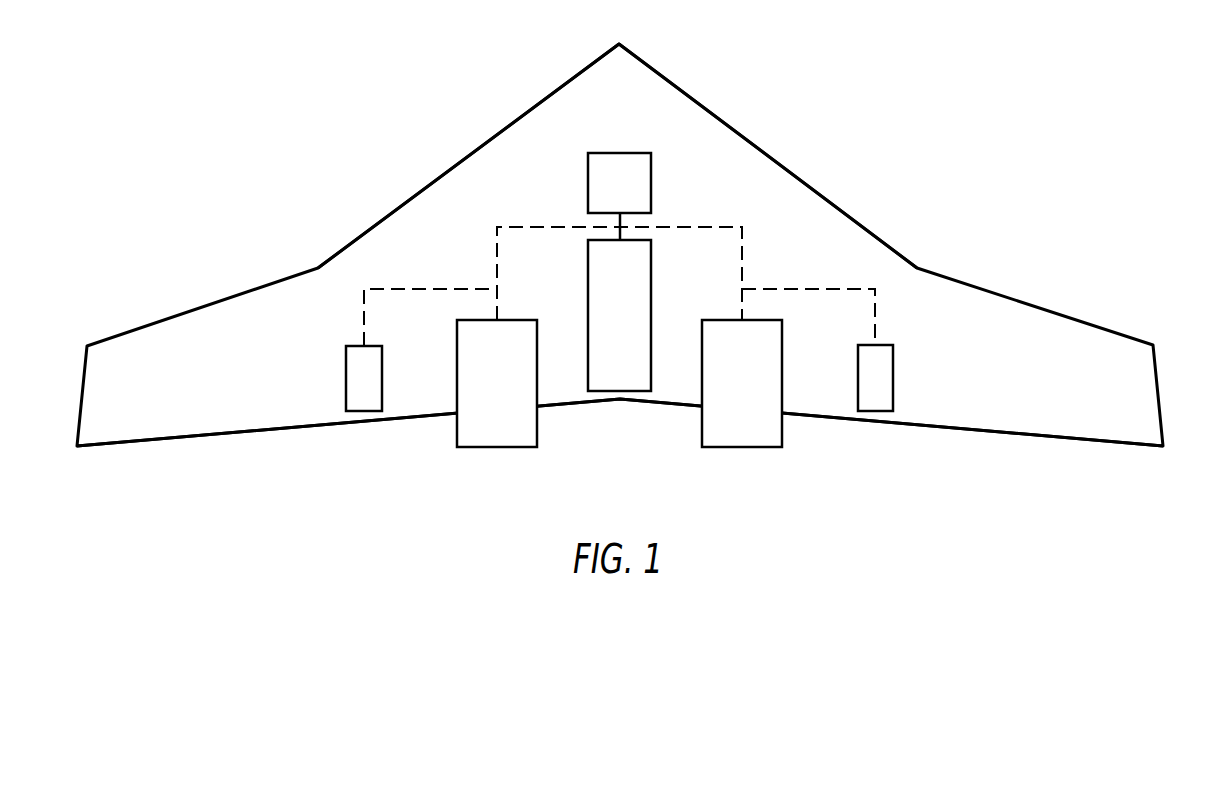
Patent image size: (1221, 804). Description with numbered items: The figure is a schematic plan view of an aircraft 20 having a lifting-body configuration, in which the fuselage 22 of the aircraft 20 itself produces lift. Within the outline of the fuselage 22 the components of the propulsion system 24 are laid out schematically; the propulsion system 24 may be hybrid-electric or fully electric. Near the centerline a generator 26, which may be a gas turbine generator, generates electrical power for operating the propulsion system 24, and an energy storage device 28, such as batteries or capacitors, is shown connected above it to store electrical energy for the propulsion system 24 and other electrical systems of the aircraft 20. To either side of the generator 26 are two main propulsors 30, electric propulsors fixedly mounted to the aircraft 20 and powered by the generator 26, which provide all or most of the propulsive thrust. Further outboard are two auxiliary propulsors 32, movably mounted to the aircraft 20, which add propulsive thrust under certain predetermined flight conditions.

The aircraft 20 is at (904, 129).
The fuselage 22 is at (807, 183).
The propulsion system 24 is at (805, 452).
The generator 26 is at (651, 291).
The energy storage device 28 is at (651, 172).
The main propulsor 30 is at (524, 320).
The auxiliary propulsor 32 is at (346, 376).